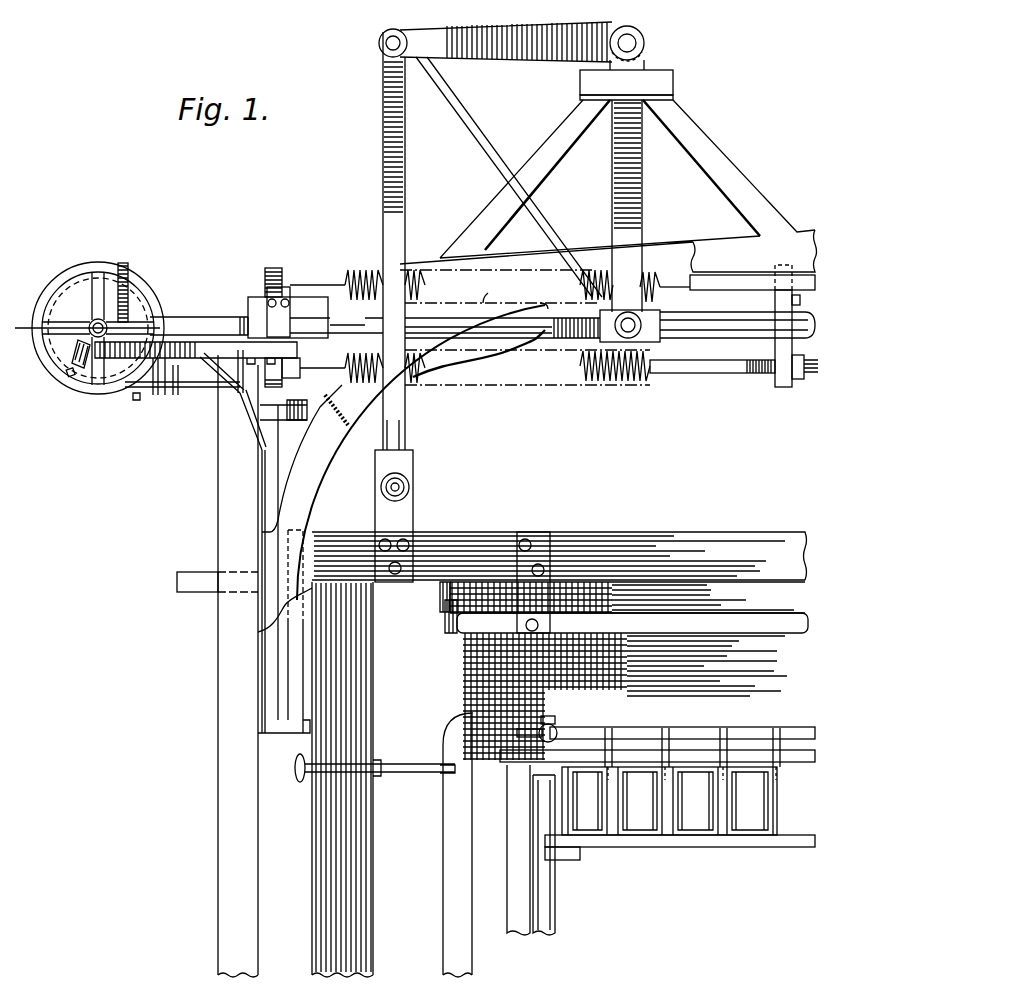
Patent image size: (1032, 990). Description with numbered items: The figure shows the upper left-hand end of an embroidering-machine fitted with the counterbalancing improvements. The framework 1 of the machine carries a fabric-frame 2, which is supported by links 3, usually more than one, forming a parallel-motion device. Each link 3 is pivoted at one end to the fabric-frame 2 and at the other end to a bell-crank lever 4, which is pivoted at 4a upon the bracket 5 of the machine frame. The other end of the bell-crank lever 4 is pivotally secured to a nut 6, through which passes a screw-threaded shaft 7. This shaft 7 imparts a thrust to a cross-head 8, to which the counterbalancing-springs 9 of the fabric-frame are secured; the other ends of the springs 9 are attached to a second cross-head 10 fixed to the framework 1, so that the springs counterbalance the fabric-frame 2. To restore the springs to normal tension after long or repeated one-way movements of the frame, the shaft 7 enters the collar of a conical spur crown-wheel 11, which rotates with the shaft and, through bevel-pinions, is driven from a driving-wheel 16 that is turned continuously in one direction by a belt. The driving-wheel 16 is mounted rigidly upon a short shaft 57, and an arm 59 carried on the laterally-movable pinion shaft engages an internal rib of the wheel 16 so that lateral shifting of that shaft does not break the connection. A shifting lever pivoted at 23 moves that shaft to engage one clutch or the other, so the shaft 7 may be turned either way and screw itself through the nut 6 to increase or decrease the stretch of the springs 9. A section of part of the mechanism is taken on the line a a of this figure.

The framework 1 is at (226, 700).
The fabric-frame 2 is at (373, 722).
The link 3 is at (404, 237).
The bell-crank lever 4 is at (535, 62).
The pivot of bell-crank lever 4a is at (645, 43).
The bracket 5 is at (743, 177).
The nut 6 is at (650, 340).
The screw-threaded shaft 7 is at (548, 342).
The cross-head 8 is at (783, 365).
The counterbalancing-springs 9 is at (370, 268).
The cross-head 10 is at (272, 268).
The conical spur crown-wheel 11 is at (128, 277).
The driving-wheel 16 is at (87, 395).
The pivot of lever 23 is at (155, 396).
The short shaft 57 is at (91, 323).
The arm 59 is at (68, 370).
The section line a a is at (87, 318).